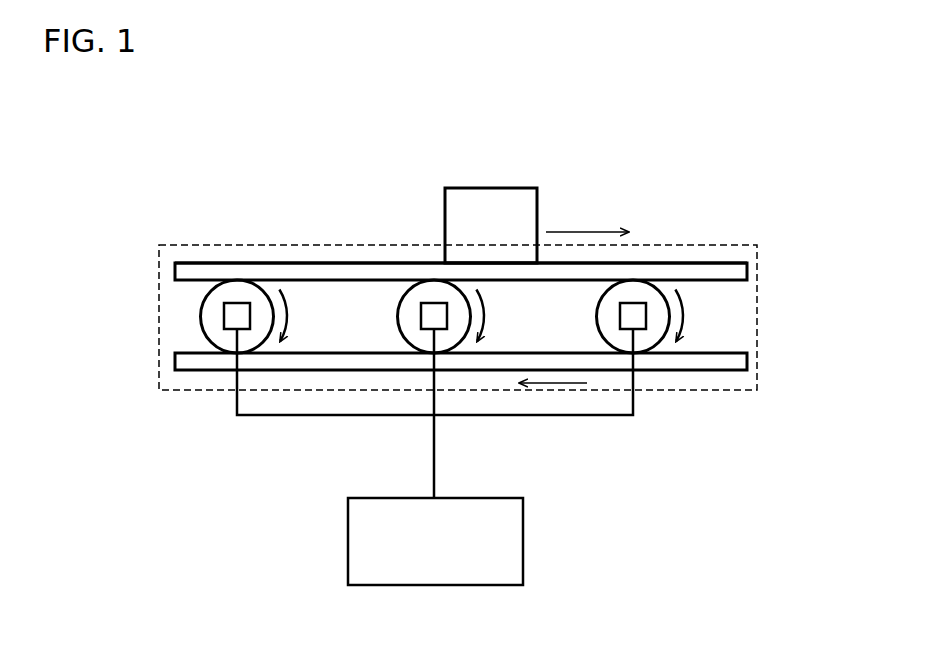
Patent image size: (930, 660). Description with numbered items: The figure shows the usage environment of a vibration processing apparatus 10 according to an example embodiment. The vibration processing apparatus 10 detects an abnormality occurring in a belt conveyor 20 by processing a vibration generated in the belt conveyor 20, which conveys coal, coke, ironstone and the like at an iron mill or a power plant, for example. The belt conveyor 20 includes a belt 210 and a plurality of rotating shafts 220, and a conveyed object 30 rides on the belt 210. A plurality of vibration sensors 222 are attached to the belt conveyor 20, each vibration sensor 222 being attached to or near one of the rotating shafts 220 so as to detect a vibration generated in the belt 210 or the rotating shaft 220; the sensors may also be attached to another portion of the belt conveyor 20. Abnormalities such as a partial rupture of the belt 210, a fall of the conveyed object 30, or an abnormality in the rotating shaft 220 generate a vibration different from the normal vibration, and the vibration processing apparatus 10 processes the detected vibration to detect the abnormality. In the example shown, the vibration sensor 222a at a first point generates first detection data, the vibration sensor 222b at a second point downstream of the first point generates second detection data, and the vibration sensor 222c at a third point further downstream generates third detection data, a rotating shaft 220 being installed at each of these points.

The vibration processing apparatus 10 is at (435, 585).
The belt conveyor 20 is at (158, 268).
The conveyed object 30 is at (490, 188).
The belt 210 is at (725, 263).
The rotating shaft 220 is at (261, 287).
The vibration sensor 222 is at (440, 257).
The vibration sensor 222a is at (237, 302).
The vibration sensor 222b is at (427, 307).
The vibration sensor 222c is at (632, 303).